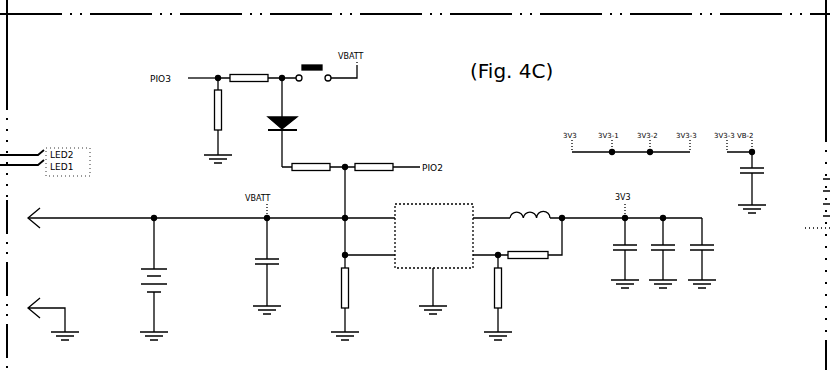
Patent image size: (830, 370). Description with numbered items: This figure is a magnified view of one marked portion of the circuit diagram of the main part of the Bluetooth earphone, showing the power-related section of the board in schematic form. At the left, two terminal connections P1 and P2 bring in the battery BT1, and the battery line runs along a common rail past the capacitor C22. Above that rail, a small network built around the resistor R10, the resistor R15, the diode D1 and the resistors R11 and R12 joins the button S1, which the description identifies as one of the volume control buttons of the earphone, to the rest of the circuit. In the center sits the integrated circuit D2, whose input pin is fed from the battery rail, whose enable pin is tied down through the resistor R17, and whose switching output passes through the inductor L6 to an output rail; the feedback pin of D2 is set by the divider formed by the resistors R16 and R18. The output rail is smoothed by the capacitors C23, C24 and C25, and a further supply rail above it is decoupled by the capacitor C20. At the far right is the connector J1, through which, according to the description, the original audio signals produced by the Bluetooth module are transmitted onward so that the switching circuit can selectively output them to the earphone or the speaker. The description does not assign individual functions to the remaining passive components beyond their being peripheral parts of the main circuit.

The resistor 47K R10 is at (250, 72).
The resistor 150K R15 is at (224, 120).
The volume control button S1 is at (319, 74).
The diode 1N4148 D1 is at (296, 122).
The resistor 47K R11 is at (313, 167).
The resistor 47K R12 is at (382, 167).
The battery positive terminal connector P1 is at (33, 211).
The battery negative terminal connector P2 is at (52, 312).
The battery 1.2V*3 AAA BT1 is at (175, 279).
The capacitor 100n C22 is at (259, 266).
The MP1556 DC-DC converter D2 is at (427, 248).
The resistor 1M R17 is at (348, 304).
The inductor 10uH L6 is at (530, 204).
The resistor 390K R16 is at (535, 245).
The resistor 91K R18 is at (502, 297).
The capacitor 104p C23 is at (616, 253).
The capacitor 10u C24 is at (671, 253).
The capacitor 10u C25 is at (709, 253).
The capacitor 10u C20 is at (760, 182).
The connector J1 is at (815, 211).